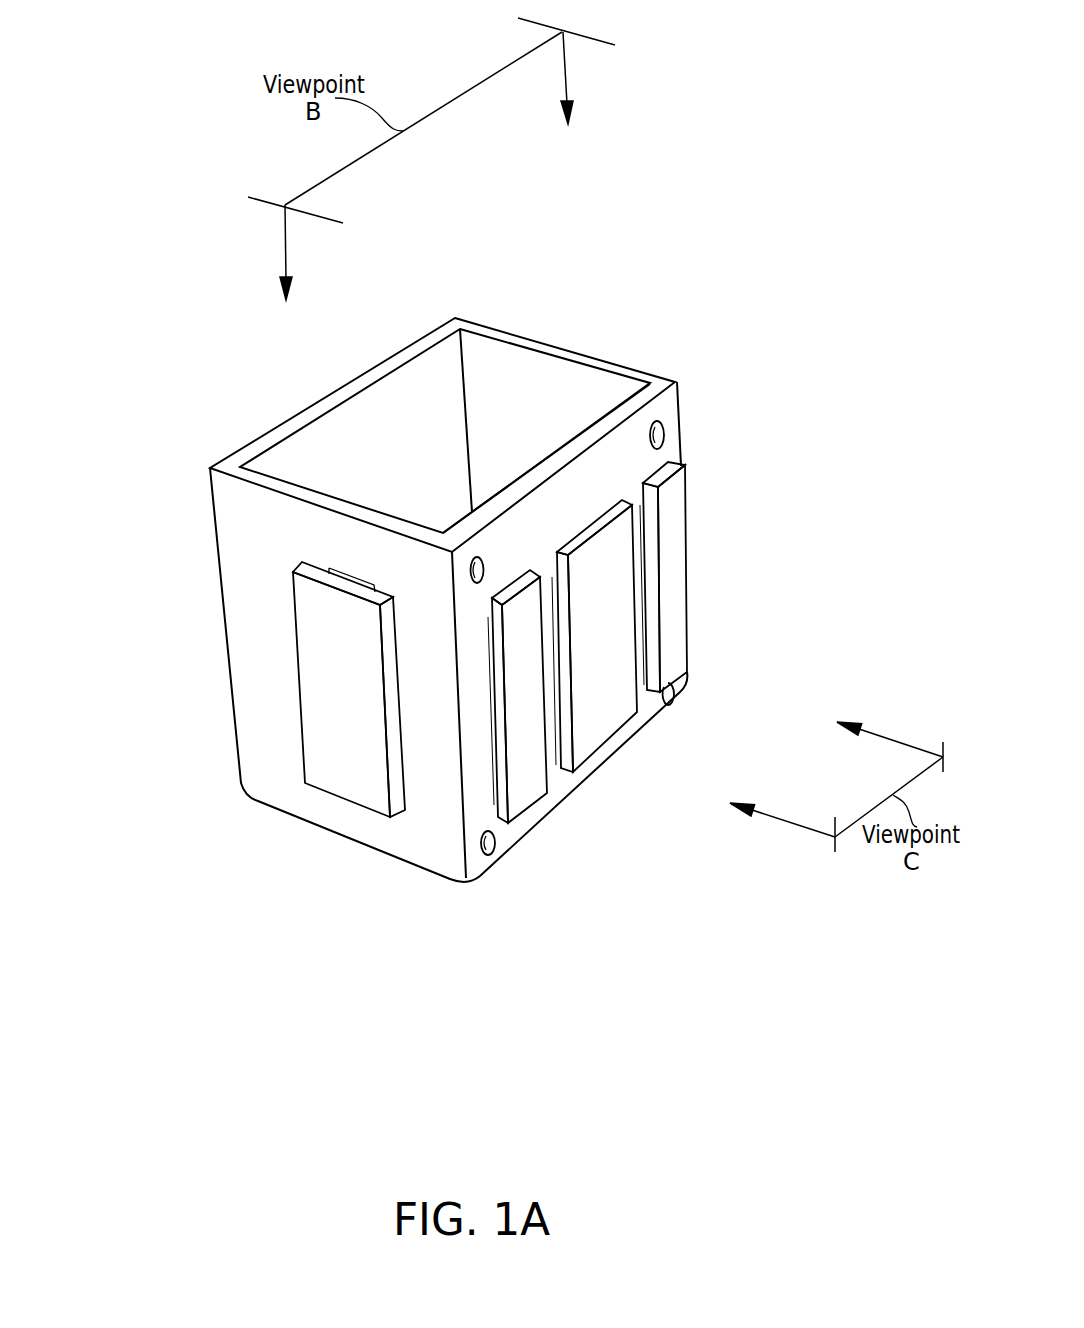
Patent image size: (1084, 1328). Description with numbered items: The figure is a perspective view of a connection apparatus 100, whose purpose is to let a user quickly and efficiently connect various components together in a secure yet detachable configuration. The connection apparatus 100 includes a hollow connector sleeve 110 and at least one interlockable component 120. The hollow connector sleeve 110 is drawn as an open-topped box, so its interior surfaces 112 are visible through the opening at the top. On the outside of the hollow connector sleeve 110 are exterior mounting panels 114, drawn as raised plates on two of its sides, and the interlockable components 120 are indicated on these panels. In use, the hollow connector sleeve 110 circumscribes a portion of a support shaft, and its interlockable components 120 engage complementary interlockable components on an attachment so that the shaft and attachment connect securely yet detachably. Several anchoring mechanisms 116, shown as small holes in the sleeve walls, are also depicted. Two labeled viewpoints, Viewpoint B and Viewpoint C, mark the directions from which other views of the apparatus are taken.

The connection apparatus 100 is at (110, 274).
The hollow connector sleeve 110 is at (263, 447).
The interior surfaces 112 is at (508, 357).
The exterior mounting panels 114 is at (287, 693).
The anchoring mechanisms 116 is at (660, 433).
The interlockable component 120 is at (663, 670).